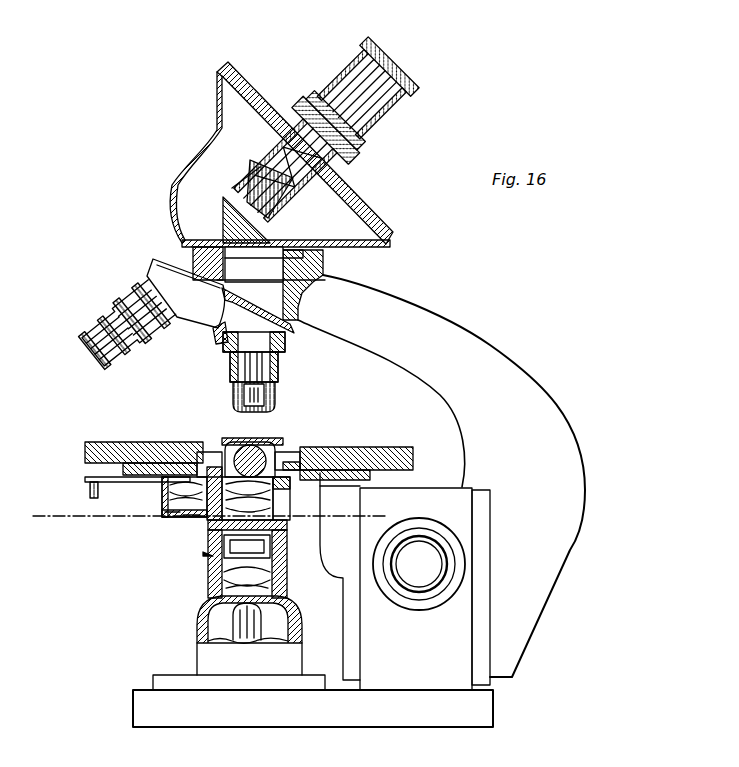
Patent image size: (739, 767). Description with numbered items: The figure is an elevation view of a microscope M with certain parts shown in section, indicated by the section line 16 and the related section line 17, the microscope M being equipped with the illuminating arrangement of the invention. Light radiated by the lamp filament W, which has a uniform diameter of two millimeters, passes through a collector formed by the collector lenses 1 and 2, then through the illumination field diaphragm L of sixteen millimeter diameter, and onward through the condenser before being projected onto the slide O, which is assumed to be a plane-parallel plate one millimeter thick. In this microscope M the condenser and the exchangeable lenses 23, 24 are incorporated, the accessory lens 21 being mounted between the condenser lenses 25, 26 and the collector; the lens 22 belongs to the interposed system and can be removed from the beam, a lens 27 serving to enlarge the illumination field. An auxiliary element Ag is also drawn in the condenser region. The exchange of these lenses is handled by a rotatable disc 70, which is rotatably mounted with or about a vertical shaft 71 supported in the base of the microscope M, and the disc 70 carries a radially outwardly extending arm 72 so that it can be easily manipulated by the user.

The microscope M is at (452, 353).
The slide O is at (245, 440).
The condenser lens 26 is at (263, 442).
The radially outwardly extending arm 72 is at (95, 480).
The condenser lens 25 is at (270, 477).
The exchangeable lens 24 is at (290, 503).
The exchangeable lens 23 is at (273, 500).
The lens 27 is at (272, 503).
The auxiliary lens group Ag is at (163, 500).
The rotatable disc 70 is at (163, 512).
The lens 22 is at (183, 517).
The vertical shaft 71 is at (212, 522).
The accessory lens 21 is at (258, 530).
The illumination field diaphragm L is at (210, 567).
The collector lens 2 is at (215, 578).
The collector lens 1 is at (213, 597).
The lamp filament W is at (252, 618).
The section line 16— 16 is at (381, 762).
The section line 17— 17 is at (35, 516).